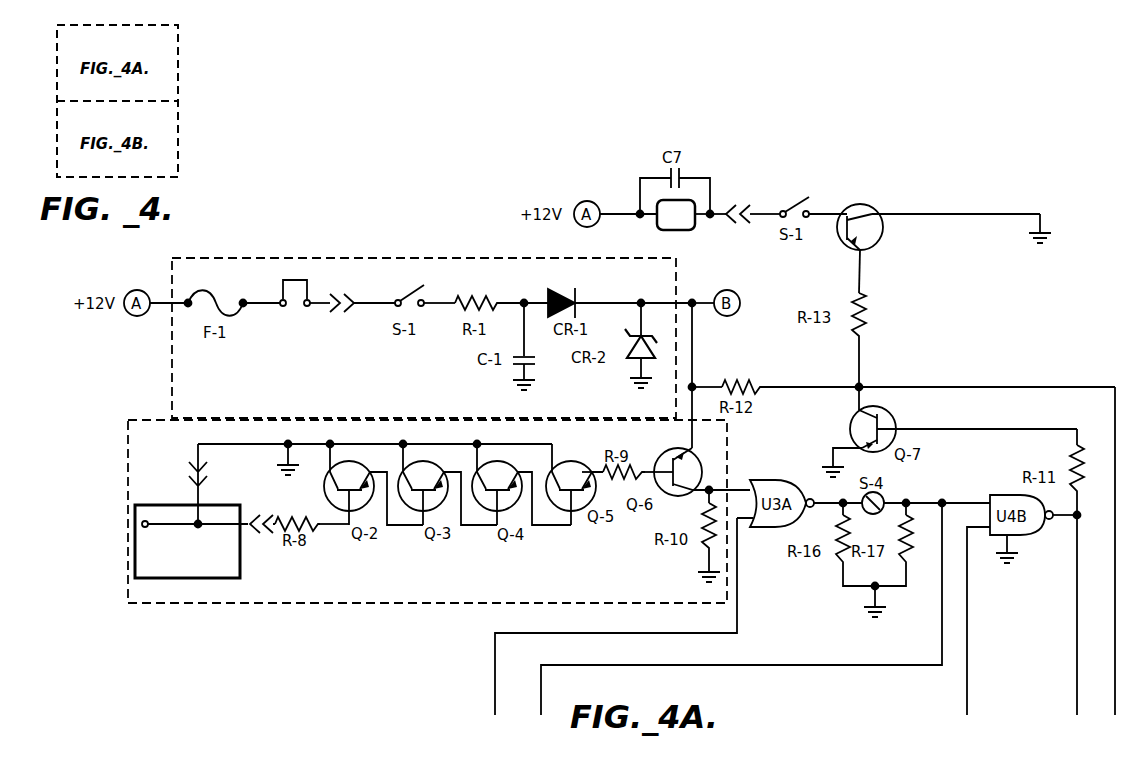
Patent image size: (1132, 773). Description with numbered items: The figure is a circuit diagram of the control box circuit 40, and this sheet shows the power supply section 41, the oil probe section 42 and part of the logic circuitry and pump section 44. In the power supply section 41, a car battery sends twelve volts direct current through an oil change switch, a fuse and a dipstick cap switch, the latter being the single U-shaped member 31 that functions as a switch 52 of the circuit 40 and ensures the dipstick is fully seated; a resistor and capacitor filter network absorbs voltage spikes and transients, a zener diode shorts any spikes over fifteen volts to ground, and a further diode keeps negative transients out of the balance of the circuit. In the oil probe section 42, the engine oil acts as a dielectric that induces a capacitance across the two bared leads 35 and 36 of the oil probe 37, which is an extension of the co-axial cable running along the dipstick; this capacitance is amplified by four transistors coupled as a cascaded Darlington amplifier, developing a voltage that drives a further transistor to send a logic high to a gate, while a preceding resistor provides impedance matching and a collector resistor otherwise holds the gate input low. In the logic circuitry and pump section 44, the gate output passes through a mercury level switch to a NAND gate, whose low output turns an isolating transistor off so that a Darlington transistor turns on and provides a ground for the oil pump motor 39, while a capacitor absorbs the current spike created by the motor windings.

The circuit 40 is at (343, 138).
The power supply section 41 is at (248, 258).
The oil probe section 42 is at (150, 417).
The U-shaped member 31 is at (283, 280).
The switch 52 is at (282, 310).
The oil pump motor 39 is at (689, 232).
The logic circuitry and pump section 44 is at (872, 198).
The conductor 35 is at (200, 527).
The conductor 36 is at (148, 527).
The extension of the co-axial cable 37 is at (240, 572).